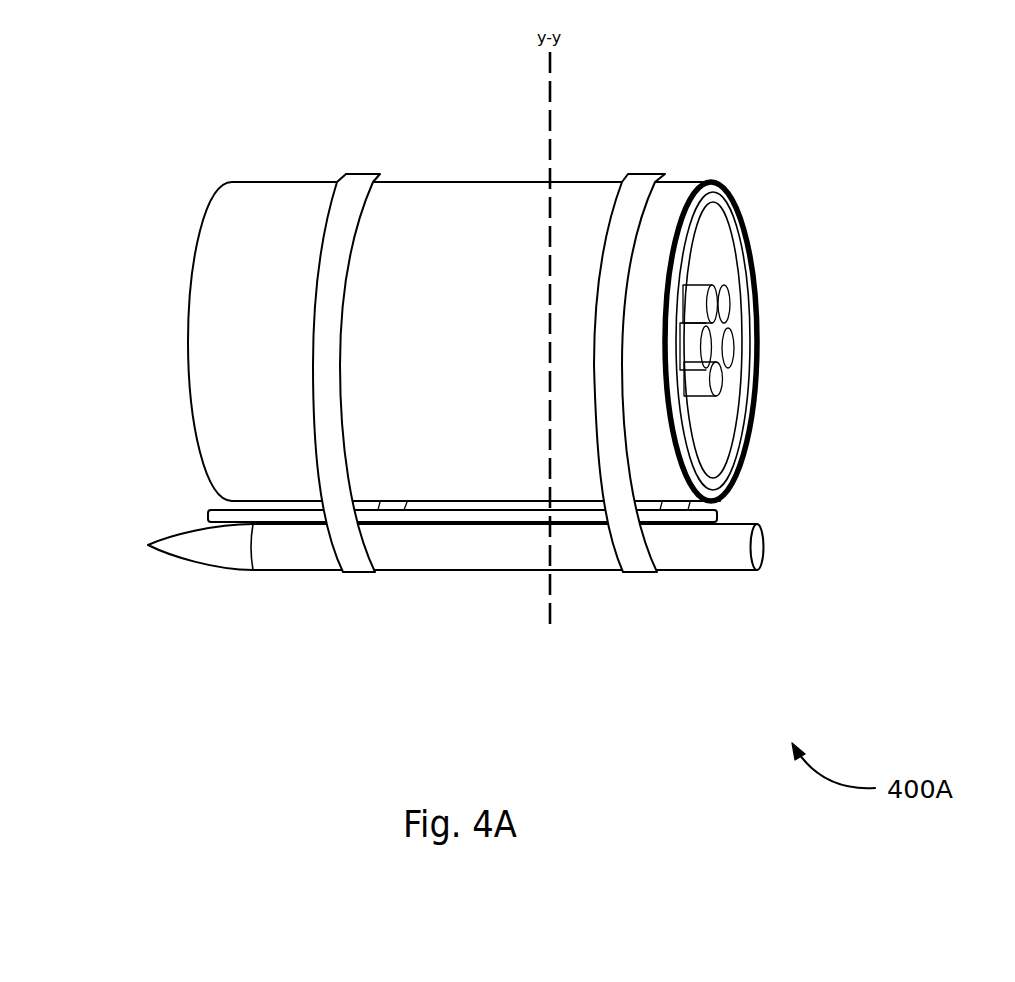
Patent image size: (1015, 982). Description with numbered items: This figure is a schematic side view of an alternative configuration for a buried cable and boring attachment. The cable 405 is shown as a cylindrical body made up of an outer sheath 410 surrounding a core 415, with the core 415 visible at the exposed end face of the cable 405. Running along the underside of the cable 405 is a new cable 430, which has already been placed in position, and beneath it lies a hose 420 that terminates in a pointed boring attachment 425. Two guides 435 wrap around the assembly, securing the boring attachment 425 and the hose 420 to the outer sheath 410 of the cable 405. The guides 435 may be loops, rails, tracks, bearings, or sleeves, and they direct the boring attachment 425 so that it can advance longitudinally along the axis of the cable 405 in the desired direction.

The cable 405 is at (865, 183).
The outer sheath 410 is at (733, 202).
The core 415 is at (773, 277).
The hose 420 is at (763, 545).
The boring attachment 425 is at (198, 570).
The new cable 430 is at (717, 515).
The guide 435 is at (332, 198).